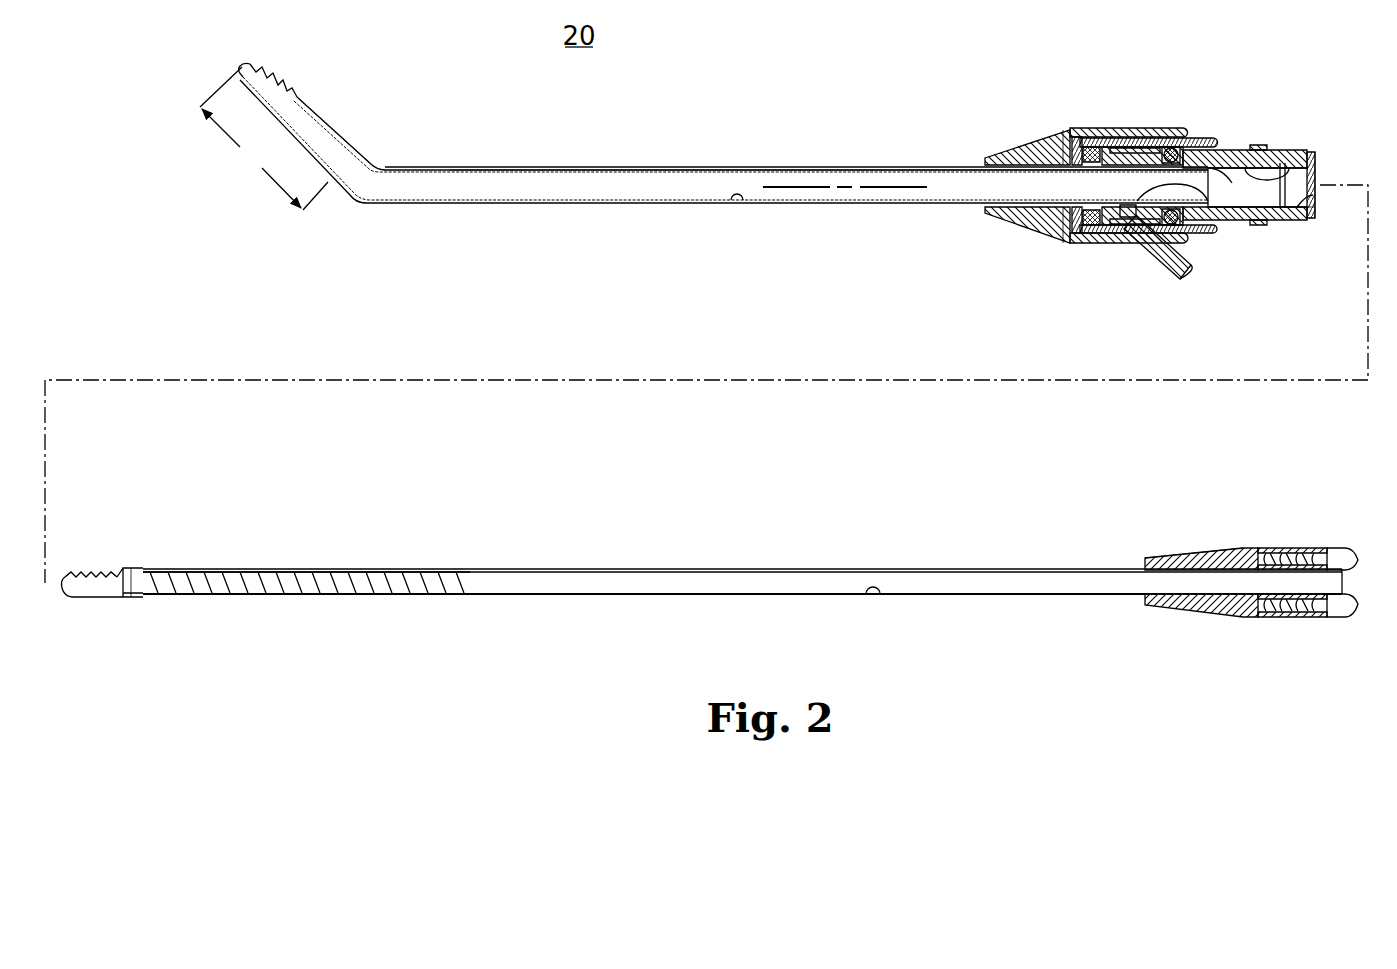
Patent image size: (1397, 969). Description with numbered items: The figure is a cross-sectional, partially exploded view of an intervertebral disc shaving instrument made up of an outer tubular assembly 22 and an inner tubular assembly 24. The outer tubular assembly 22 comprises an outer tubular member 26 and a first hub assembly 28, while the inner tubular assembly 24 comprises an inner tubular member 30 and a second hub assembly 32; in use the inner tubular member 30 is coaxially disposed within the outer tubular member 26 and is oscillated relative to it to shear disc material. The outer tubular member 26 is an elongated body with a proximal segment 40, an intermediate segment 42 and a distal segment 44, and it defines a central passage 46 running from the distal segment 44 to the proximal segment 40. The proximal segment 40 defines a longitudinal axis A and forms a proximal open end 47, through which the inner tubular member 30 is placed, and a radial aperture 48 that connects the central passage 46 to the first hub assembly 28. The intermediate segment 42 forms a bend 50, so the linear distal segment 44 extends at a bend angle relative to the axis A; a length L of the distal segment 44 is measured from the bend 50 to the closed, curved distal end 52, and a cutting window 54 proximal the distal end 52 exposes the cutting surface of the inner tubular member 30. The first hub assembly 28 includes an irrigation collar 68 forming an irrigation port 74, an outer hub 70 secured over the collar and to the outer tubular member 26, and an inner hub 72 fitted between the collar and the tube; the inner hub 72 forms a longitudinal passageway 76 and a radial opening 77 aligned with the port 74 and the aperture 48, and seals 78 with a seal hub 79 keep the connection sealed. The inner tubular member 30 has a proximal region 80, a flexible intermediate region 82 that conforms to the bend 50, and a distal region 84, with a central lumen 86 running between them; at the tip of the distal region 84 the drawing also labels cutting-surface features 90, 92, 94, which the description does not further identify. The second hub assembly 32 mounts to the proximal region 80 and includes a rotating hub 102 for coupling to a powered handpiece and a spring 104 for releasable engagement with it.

The outer tubular assembly 22 is at (605, 212).
The inner tubular assembly 24 is at (621, 566).
The outer tubular member 26 is at (566, 164).
The first hub assembly 28 is at (1176, 118).
The inner tubular member 30 is at (604, 598).
The second hub assembly 32 is at (1246, 540).
The proximal segment 40 is at (1072, 243).
The intermediate segment 42 is at (462, 166).
The distal segment 44 is at (330, 126).
The central passage 46 is at (740, 206).
The proximal open end 47 is at (1216, 172).
The radial aperture 48 is at (1218, 190).
The bend 50 is at (353, 205).
The distal end 52 is at (238, 66).
The cutting window 54 is at (283, 86).
The irrigation collar 68 is at (1206, 130).
The outer hub 70 is at (1034, 140).
The inner hub 72 is at (1280, 151).
The irrigation port 74 is at (1148, 265).
The longitudinal passageway 76 is at (1318, 174).
The radial opening 77 is at (1122, 222).
The seals 78 is at (1094, 150).
The seal hub 79 is at (1304, 197).
The proximal region 80 is at (1205, 606).
The intermediate region 82 is at (453, 569).
The distal region 84 is at (95, 598).
The central lumen 86 is at (876, 600).
The cutting edge 90 is at (95, 568).
The tooth 92 is at (86, 572).
The tooth 94 is at (113, 572).
The rotating hub 102 is at (1171, 553).
The spring 104 is at (1309, 555).
The longitudinal axis A is at (818, 185).
The length of the distal segment L is at (264, 138).